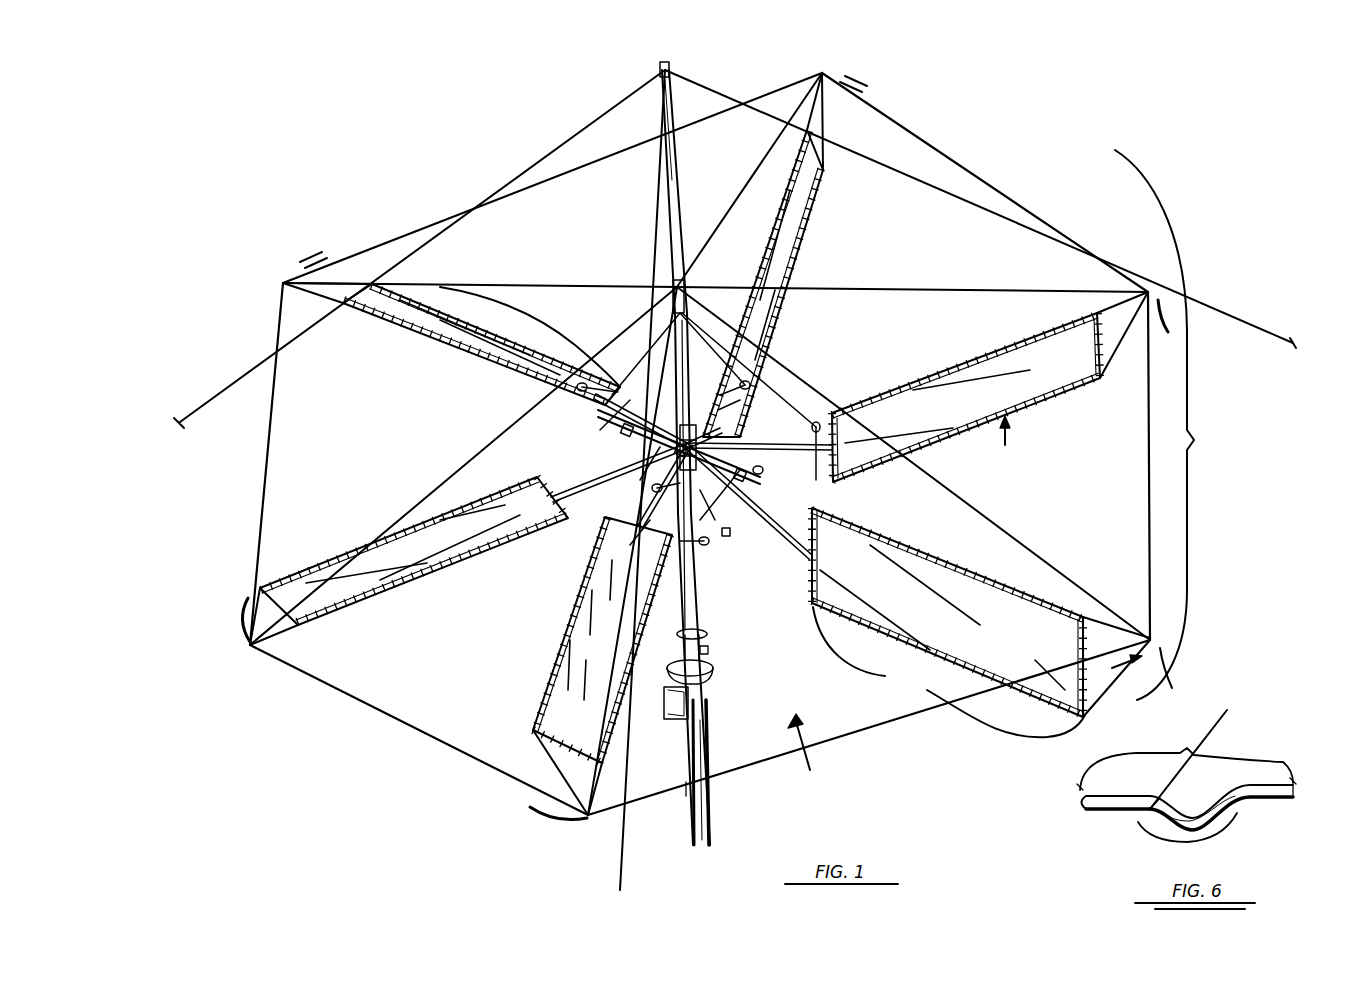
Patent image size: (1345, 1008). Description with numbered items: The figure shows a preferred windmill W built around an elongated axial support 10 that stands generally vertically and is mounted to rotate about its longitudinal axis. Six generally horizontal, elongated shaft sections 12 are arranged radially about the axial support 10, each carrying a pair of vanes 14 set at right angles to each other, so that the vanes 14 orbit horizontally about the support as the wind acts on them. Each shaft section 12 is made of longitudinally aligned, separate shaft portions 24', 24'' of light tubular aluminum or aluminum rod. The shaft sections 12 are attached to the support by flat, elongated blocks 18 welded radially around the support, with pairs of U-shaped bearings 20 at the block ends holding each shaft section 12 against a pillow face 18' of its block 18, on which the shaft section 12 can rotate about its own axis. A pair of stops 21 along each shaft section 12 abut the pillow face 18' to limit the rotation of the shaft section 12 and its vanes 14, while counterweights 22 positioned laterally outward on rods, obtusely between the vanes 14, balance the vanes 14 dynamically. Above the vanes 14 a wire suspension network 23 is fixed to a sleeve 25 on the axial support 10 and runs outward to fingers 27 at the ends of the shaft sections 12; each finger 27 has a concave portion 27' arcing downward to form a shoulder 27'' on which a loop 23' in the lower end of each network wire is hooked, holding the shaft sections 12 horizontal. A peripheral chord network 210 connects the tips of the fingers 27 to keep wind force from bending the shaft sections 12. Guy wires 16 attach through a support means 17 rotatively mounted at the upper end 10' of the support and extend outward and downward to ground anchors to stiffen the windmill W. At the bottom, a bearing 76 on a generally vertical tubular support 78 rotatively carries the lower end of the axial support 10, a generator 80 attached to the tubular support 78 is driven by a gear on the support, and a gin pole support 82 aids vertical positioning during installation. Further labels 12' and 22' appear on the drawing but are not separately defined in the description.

In FIG. 1, the axial support 10 is at (702, 457).
In FIG. 1, the upper end of the axial support 10' is at (690, 130).
In FIG. 1, the shaft section 12 is at (705, 446).
In FIG. 6, the shaft section 12 is at (1221, 810).
In FIG. 1, the blade support rod 12' is at (669, 447).
In FIG. 1, the vane 14 is at (802, 258).
In FIG. 1, the guy wire 16 is at (604, 112).
In FIG. 1, the support means 17 is at (672, 68).
In FIG. 1, the block 18 is at (691, 476).
In FIG. 1, the pillow face 18' is at (681, 483).
In FIG. 1, the U-shaped bearing 20 is at (622, 428).
In FIG. 1, the stop 21 is at (692, 428).
In FIG. 1, the counterweight 22 is at (698, 444).
In FIG. 1, the clamp 22' is at (667, 440).
In FIG. 1, the wire suspension network 23 is at (700, 444).
In FIG. 6, the wire suspension network 23 is at (1209, 759).
In FIG. 6, the loop 23' is at (1181, 793).
In FIG. 1, the shaft portion 24' is at (678, 444).
In FIG. 1, the shaft portion 24'' is at (700, 500).
In FIG. 1, the sleeve 25 is at (684, 284).
In FIG. 6, the finger 27 is at (1186, 759).
In FIG. 6, the concave portion 27' is at (1187, 834).
In FIG. 6, the shoulder 27'' is at (1116, 817).
In FIG. 1, the bearing 76 is at (714, 678).
In FIG. 1, the tubular support 78 is at (704, 760).
In FIG. 1, the generator 80 is at (710, 652).
In FIG. 1, the gin pole support 82 is at (682, 720).
In FIG. 1, the peripheral chord network 210 is at (560, 180).
In FIG. 1, the windmill W is at (1168, 425).